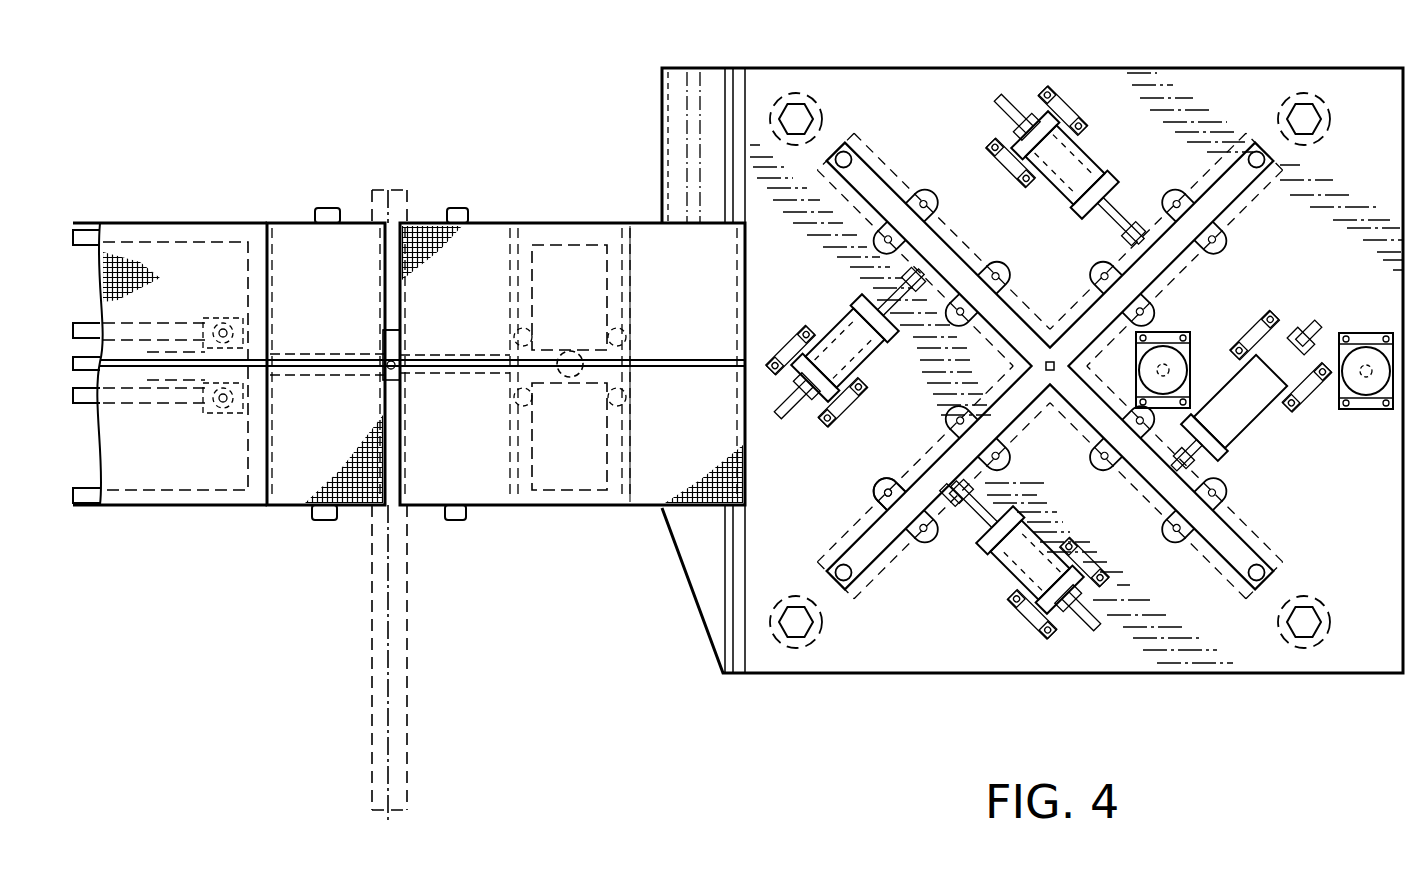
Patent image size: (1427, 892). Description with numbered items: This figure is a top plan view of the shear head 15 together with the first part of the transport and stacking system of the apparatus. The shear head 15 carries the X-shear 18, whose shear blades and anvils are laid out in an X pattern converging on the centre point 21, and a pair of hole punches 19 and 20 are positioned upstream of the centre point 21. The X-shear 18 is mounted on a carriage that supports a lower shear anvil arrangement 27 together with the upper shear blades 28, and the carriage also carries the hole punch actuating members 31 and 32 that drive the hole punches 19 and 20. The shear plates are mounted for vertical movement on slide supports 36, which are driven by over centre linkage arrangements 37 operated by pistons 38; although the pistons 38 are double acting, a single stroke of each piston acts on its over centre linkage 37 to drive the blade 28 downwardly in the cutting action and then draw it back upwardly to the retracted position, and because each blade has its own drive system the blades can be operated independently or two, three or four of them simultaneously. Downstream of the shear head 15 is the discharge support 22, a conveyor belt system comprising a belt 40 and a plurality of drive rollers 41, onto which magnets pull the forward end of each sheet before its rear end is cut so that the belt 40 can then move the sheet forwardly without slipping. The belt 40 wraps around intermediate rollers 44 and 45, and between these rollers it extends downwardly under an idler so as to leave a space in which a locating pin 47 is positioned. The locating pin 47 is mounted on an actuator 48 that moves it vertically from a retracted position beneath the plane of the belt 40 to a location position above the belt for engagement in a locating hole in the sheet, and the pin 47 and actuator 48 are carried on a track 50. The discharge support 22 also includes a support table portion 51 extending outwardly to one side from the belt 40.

The shear head 15 is at (826, 692).
The X-shear 18 is at (885, 100).
The hole punch 19 is at (1367, 362).
The hole punch 20 is at (1163, 362).
The centre point 21 is at (1050, 362).
The discharge support 22 is at (528, 195).
The lower shear anvil arrangement 27 is at (843, 534).
The upper shear blades 28 is at (935, 462).
The hole punch actuating member 31 is at (1213, 388).
The hole punch actuating member 32 is at (1345, 400).
The slide supports 36 is at (880, 490).
The over centre linkage arrangements 37 is at (965, 520).
The pistons 38 is at (1005, 582).
The belt 40 is at (157, 468).
The drive rollers 41 is at (648, 515).
The intermediate roller 44 is at (305, 510).
The intermediate roller 45 is at (482, 508).
The locating pin 47 is at (403, 348).
The actuator 48 is at (388, 340).
The track 50 is at (390, 608).
The support table portion 51 is at (405, 680).